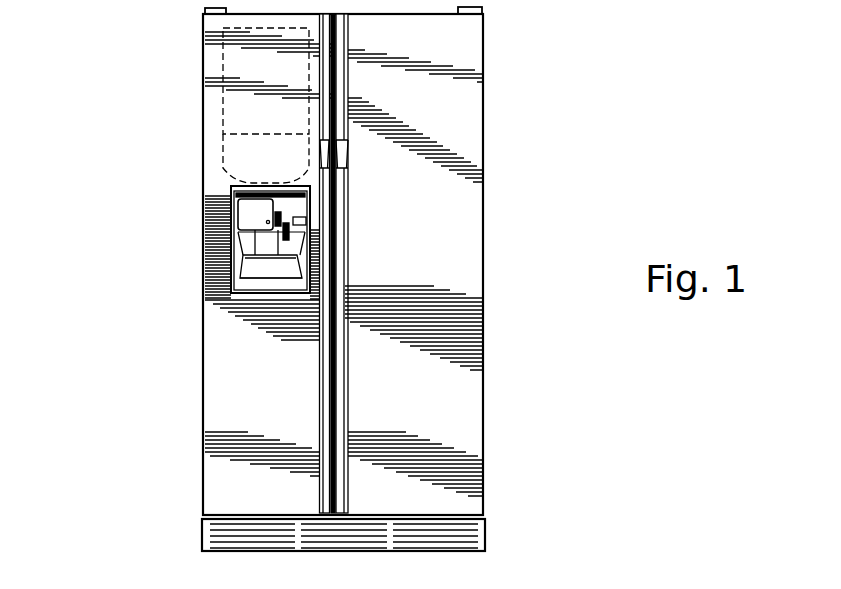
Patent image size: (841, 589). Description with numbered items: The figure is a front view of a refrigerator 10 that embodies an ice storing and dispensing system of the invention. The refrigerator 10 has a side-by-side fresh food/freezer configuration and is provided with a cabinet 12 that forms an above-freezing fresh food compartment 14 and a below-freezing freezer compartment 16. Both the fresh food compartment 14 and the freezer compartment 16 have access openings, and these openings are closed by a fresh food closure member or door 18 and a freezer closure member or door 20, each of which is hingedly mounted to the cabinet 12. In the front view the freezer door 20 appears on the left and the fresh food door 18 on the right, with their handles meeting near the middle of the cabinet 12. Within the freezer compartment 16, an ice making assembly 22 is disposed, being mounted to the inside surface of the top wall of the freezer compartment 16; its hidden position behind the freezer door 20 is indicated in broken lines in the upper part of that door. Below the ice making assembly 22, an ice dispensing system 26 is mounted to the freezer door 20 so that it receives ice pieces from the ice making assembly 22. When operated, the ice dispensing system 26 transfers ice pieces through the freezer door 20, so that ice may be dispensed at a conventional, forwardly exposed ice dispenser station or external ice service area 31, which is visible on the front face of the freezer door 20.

The refrigerator 10 is at (172, 84).
The cabinet 12 is at (485, 300).
The fresh food compartment 14 is at (440, 240).
The freezer compartment 16 is at (245, 347).
The fresh food door 18 is at (424, 172).
The freezer door 20 is at (262, 402).
The ice making assembly 22 is at (222, 68).
The ice dispensing system 26 is at (225, 125).
The ice dispenser station 31 is at (260, 270).